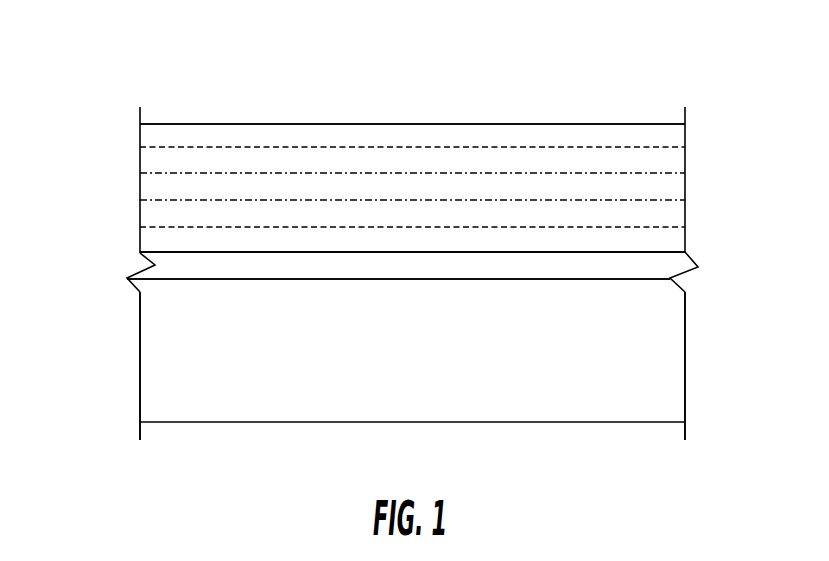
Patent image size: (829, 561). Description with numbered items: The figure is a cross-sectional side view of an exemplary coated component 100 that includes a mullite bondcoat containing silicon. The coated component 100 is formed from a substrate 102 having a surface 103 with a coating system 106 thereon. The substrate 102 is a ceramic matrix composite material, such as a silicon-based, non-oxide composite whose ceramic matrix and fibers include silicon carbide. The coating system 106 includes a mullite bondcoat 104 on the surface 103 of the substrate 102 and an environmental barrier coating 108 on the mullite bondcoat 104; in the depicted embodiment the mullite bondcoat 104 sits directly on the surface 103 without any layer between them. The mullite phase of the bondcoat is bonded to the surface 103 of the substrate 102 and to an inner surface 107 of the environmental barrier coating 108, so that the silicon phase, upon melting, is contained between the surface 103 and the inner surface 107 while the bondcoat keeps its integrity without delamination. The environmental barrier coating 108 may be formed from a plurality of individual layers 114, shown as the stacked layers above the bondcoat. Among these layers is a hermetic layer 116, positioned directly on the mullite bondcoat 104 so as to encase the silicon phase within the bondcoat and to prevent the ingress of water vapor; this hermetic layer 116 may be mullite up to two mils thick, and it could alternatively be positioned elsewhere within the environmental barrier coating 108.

The coated component 100 is at (74, 56).
The substrate 102 is at (265, 380).
The surface 103 is at (480, 266).
The mullite bondcoat 104 is at (660, 270).
The coating system 106 is at (120, 124).
The inner surface 107 is at (330, 266).
The environmental barrier coating 108 is at (726, 122).
The individual layers 114 is at (238, 158).
The hermetic layer 116 is at (655, 230).